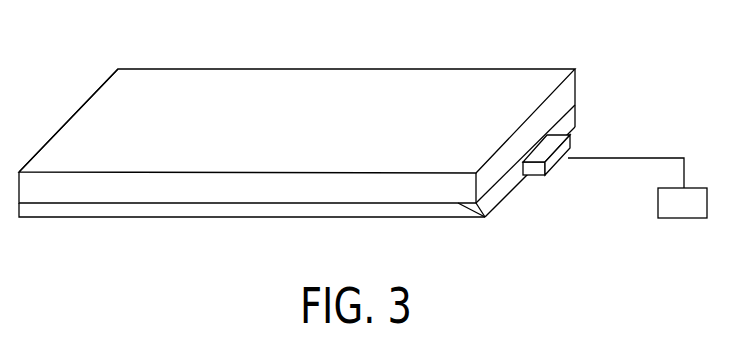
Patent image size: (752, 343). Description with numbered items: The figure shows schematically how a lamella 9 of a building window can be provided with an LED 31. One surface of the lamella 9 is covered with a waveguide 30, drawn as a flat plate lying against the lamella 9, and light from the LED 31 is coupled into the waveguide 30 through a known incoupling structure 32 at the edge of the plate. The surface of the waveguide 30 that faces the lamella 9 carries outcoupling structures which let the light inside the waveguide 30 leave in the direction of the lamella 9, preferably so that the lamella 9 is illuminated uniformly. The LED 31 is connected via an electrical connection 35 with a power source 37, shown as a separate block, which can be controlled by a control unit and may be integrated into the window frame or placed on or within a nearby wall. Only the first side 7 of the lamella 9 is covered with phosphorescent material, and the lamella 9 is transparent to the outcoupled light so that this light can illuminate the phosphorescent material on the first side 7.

The first side 7 is at (344, 84).
The lamella 9 is at (70, 118).
The waveguide 30 is at (70, 218).
The LED 31 is at (567, 146).
The incoupling structure 32 is at (490, 212).
The electrical connection 35 is at (615, 160).
The power source 37 is at (675, 218).